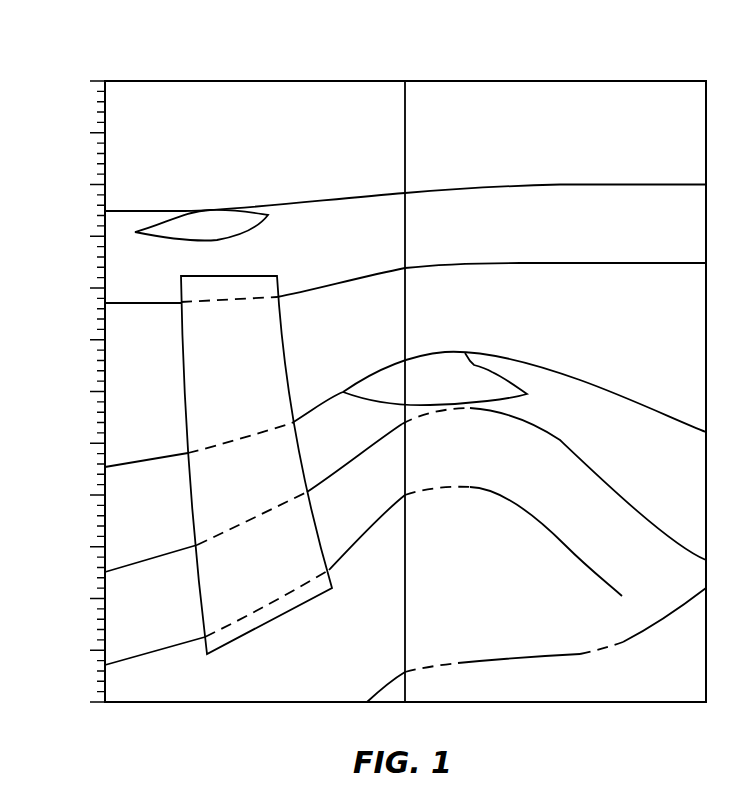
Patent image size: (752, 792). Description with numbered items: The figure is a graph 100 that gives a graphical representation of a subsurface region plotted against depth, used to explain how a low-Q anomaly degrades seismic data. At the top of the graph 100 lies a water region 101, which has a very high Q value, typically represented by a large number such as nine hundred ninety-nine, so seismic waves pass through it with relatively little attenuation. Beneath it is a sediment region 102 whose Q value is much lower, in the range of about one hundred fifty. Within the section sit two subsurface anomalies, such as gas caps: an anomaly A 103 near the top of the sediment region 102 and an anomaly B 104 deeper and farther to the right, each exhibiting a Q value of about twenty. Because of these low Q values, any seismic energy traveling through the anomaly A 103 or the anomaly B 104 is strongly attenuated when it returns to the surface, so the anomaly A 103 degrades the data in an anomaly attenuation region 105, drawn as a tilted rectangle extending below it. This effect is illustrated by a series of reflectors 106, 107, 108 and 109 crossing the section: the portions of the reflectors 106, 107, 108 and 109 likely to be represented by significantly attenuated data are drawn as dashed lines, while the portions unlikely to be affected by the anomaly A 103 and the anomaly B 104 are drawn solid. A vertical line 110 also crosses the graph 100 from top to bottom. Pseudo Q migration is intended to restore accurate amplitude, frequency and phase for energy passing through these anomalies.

The graph 100 is at (141, 41).
The water region 101 is at (405, 166).
The sediment region 102 is at (405, 256).
The anomaly A 103 is at (252, 228).
The anomaly B 104 is at (343, 396).
The anomaly attenuation region 105 is at (310, 347).
The reflector 106 is at (143, 302).
The reflector 107 is at (145, 457).
The reflector 108 is at (143, 557).
The reflector 109 is at (143, 657).
The well / vertical line 110 is at (405, 143).